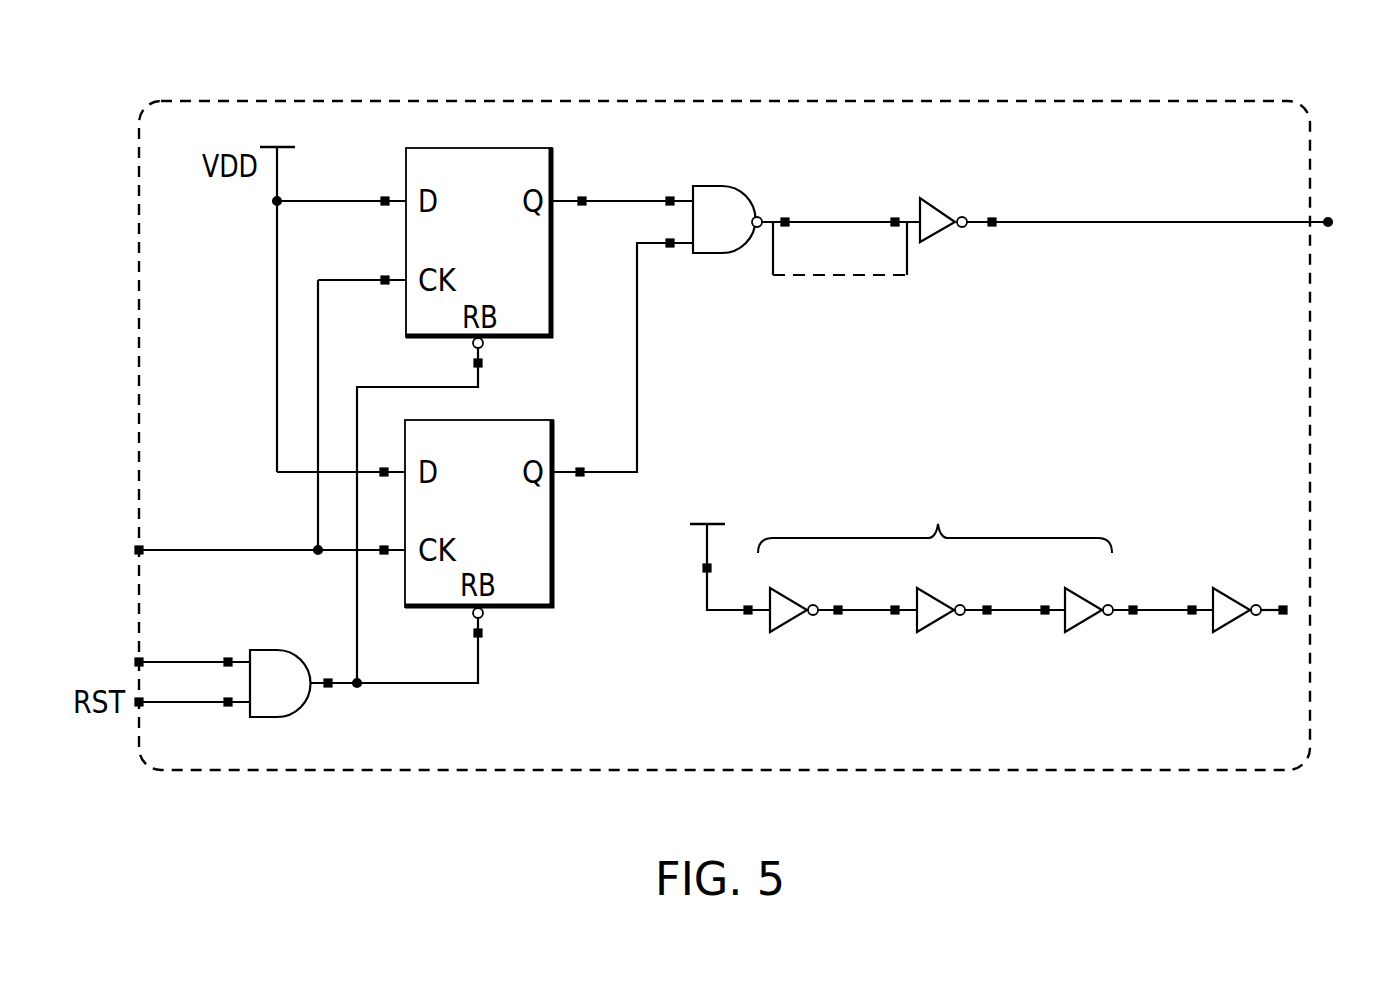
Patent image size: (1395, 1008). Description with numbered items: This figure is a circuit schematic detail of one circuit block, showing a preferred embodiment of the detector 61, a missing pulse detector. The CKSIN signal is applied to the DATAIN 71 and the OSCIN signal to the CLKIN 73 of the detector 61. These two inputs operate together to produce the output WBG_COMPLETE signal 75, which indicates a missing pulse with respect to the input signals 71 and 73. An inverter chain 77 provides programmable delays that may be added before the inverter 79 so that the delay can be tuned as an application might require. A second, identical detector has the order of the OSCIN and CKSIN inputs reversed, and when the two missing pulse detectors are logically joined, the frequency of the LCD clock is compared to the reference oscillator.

The detector 61 is at (611, 79).
The DATAIN 71 is at (137, 548).
The CLKIN 73 is at (137, 660).
The WBG_COMPLETE signal 75 is at (1332, 220).
The inverter chain 77 is at (841, 289).
The inverter 79 is at (930, 198).